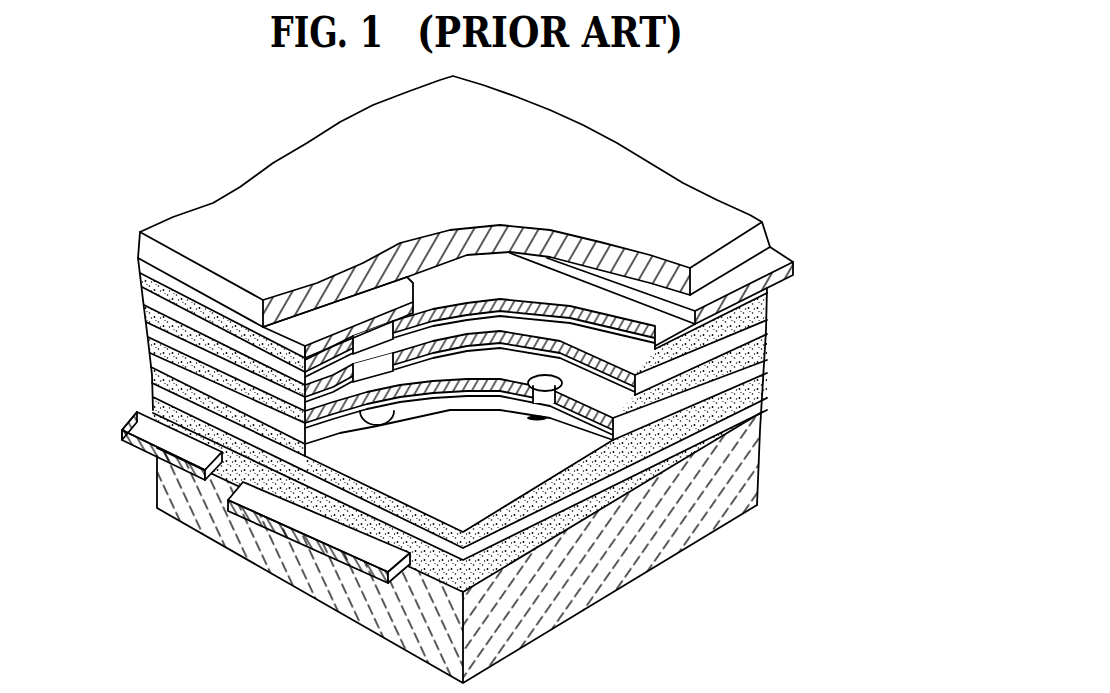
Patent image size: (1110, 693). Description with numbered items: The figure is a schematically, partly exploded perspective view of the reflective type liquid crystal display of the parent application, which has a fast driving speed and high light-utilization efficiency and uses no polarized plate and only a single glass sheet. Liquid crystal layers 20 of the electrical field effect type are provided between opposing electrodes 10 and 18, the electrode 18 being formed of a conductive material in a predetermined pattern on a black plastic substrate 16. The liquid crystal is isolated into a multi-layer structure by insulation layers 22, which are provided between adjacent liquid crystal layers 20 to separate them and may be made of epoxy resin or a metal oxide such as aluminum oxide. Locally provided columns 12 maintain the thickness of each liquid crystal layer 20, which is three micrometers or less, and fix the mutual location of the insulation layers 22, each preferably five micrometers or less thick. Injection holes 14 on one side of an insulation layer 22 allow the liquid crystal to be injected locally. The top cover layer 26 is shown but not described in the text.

The opposing electrode 10 is at (140, 272).
The column 12 is at (415, 357).
The injection hole 14 is at (520, 398).
The black plastic substrate 16 is at (758, 473).
The electrode 18 is at (124, 413).
The liquid crystal layer 20 is at (768, 303).
The insulation layer 22 is at (767, 327).
The top cover layer 26 is at (702, 213).